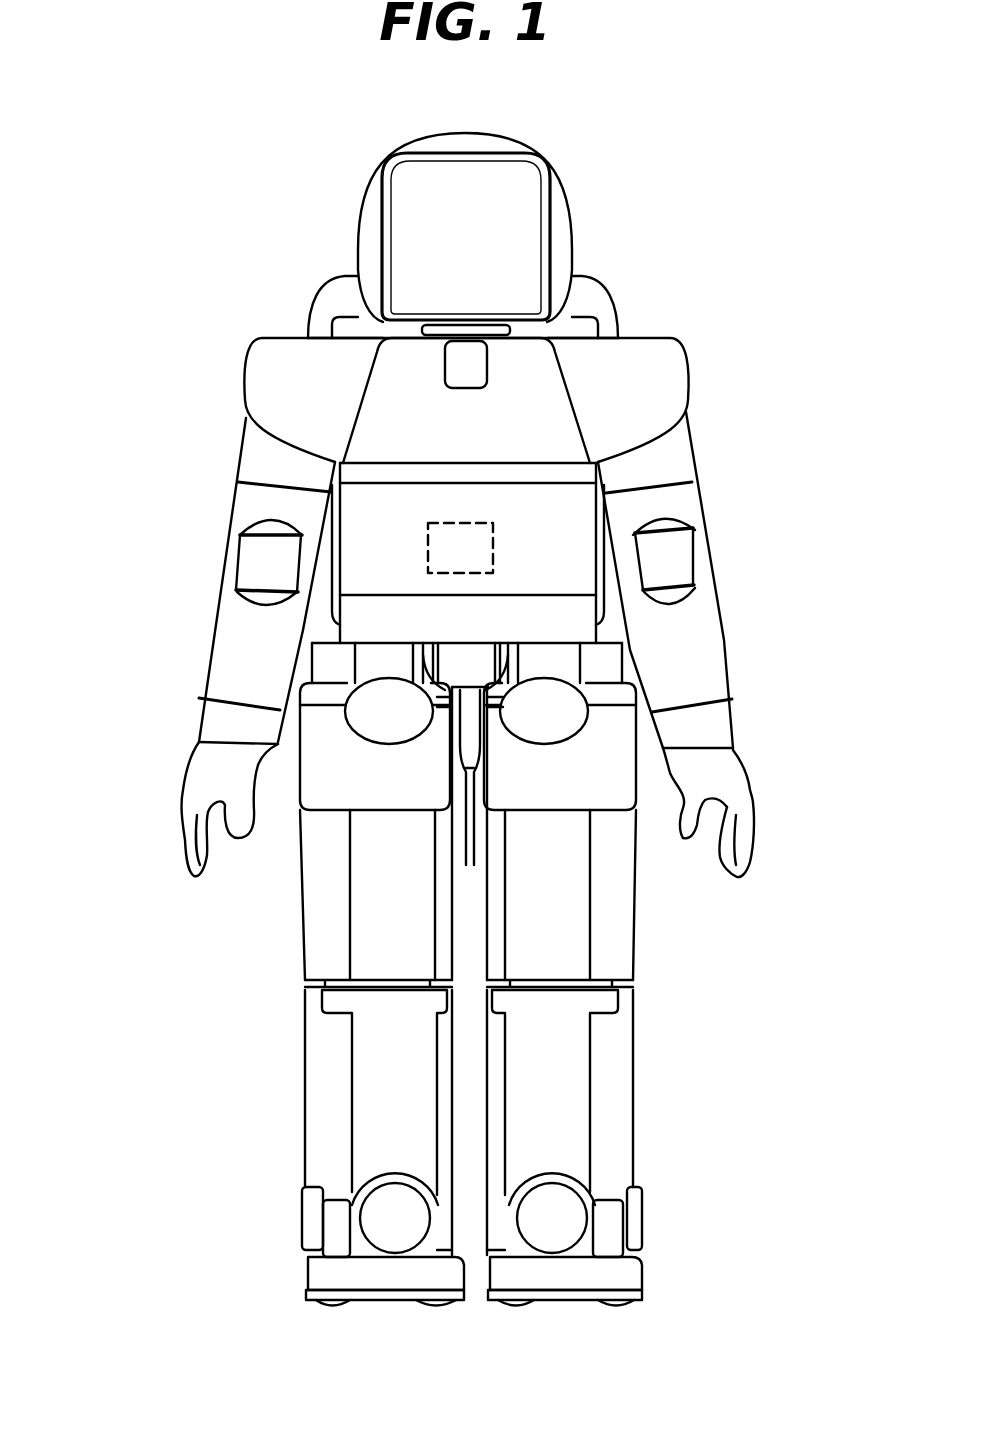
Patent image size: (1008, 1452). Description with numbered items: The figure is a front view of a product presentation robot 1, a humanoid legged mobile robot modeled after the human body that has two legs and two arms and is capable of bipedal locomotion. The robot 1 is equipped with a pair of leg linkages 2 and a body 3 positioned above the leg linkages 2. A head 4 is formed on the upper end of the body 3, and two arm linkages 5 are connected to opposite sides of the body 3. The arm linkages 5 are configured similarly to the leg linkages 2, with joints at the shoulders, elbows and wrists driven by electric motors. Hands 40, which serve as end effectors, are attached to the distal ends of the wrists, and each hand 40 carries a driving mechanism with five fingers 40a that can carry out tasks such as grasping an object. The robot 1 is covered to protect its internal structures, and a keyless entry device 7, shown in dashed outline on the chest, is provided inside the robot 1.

The product presentation robot 1 is at (617, 250).
The leg linkage 2 is at (267, 981).
The body 3 is at (577, 570).
The head 4 is at (540, 153).
The arm linkage 5 is at (213, 430).
The keyless entry device 7 is at (490, 547).
The hand 40 is at (181, 763).
The finger 40a is at (753, 822).